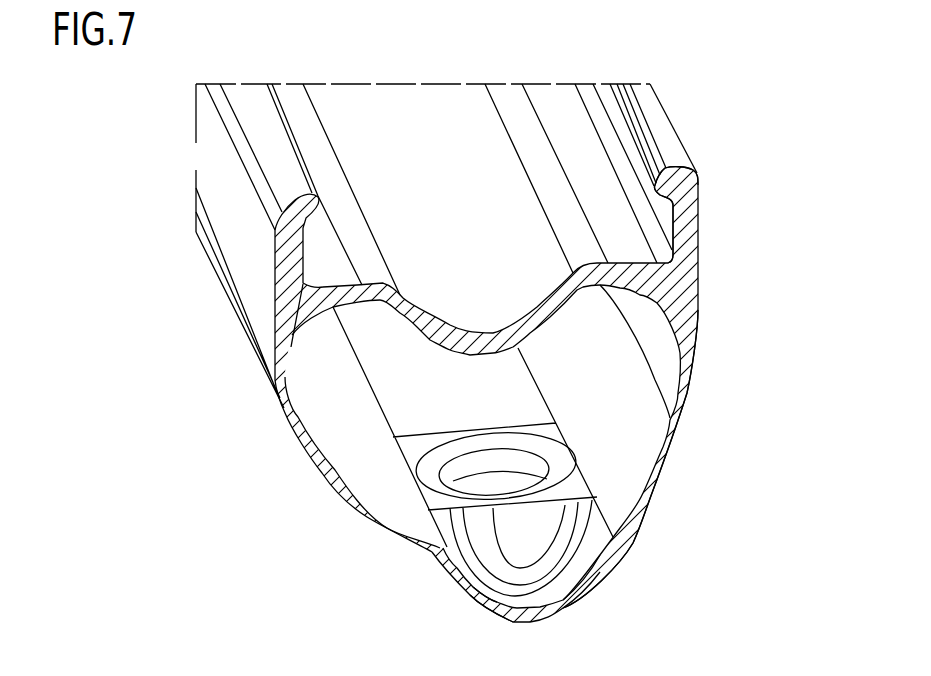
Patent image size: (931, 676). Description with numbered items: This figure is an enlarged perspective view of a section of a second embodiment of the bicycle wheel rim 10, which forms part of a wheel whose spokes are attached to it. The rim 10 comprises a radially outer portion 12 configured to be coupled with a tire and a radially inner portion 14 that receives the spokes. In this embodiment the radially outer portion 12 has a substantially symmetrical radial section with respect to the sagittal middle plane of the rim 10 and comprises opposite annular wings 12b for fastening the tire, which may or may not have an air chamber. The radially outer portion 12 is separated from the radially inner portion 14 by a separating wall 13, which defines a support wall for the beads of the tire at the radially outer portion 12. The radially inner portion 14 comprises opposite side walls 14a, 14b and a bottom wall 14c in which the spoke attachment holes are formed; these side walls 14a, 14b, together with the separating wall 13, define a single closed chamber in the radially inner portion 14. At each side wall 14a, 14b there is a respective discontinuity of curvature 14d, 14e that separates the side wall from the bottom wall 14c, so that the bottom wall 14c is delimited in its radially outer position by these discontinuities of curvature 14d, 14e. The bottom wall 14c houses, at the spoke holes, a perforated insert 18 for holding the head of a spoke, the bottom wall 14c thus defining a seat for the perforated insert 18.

The bicycle wheel rim 10 is at (757, 409).
The radially outer portion 12 is at (736, 243).
The annular wings 12b is at (290, 254).
The separating wall 13 is at (430, 294).
The radially inner portion 14 is at (753, 352).
The side wall 14a is at (316, 473).
The side wall 14b is at (687, 412).
The bottom wall 14c is at (578, 606).
The discontinuity of curvature 14d is at (415, 566).
The discontinuity of curvature 14e is at (660, 550).
The perforated insert 18 is at (487, 556).